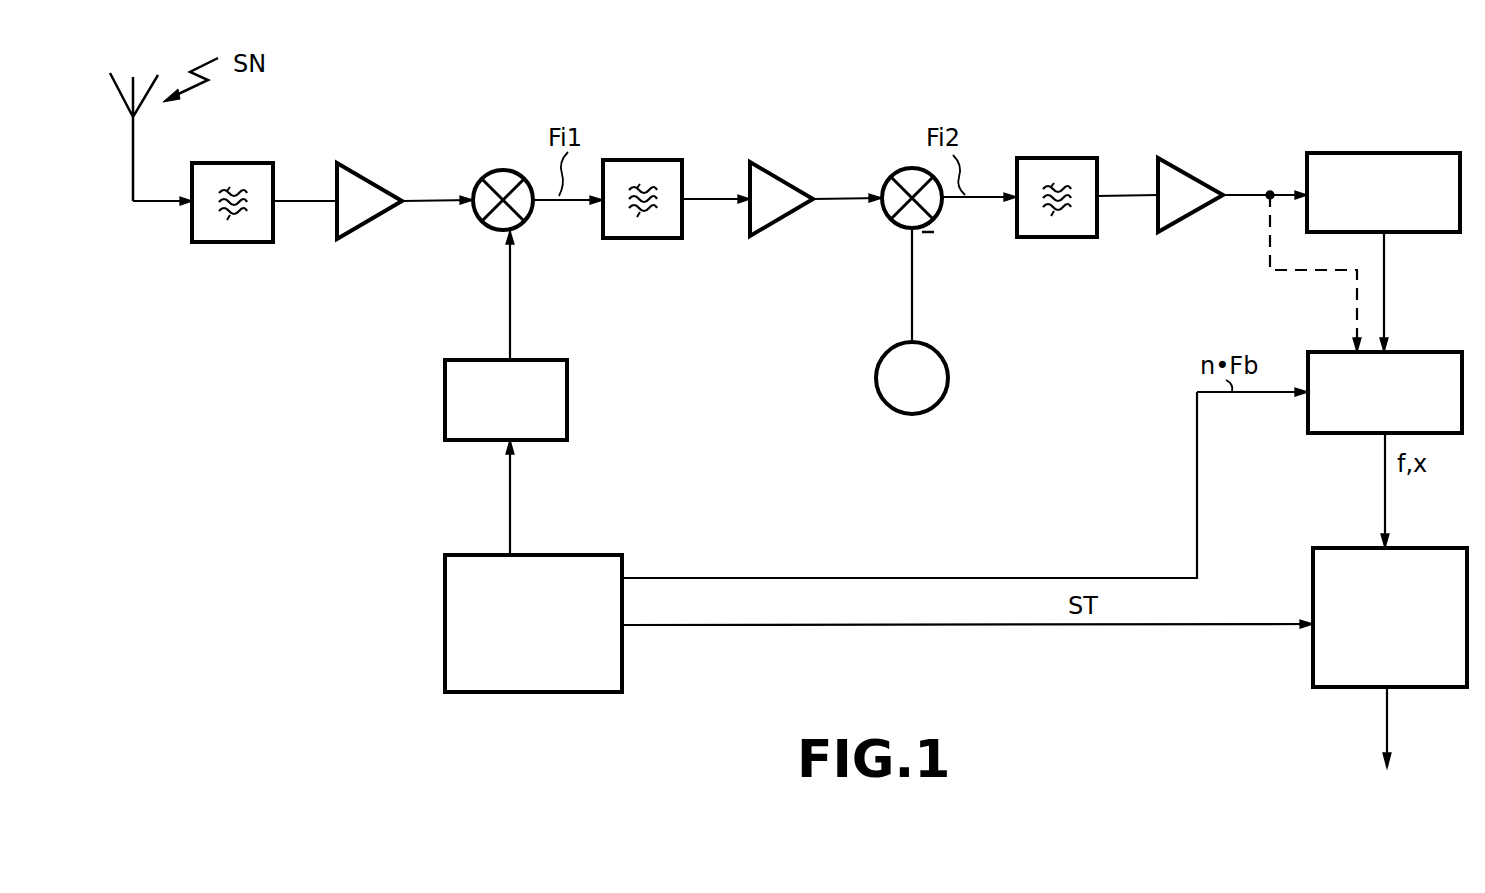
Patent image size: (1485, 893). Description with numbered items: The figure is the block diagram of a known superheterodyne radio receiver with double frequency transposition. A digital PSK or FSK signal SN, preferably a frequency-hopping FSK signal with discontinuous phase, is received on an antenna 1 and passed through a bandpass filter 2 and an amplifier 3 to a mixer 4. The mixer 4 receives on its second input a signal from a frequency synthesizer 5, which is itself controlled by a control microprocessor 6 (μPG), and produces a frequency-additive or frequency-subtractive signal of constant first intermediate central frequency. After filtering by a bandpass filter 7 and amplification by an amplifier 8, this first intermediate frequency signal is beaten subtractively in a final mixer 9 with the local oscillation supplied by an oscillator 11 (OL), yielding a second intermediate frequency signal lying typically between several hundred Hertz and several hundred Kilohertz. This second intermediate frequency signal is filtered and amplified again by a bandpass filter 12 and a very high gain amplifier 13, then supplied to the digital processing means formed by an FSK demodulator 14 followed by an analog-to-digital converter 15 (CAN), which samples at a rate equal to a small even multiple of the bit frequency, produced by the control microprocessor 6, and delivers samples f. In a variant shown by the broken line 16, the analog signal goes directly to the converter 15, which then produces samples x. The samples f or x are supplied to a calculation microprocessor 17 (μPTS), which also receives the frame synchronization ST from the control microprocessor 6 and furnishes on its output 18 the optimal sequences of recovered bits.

The antenna 1 is at (122, 93).
The bandpass filter 2 is at (252, 244).
The amplifier 3 is at (362, 238).
The mixer 4 is at (510, 170).
The frequency synthesizer 5 is at (570, 417).
The control microprocessor 6 is at (445, 653).
The bandpass filter 7 is at (662, 240).
The amplifier 8 is at (773, 232).
The final mixer 9 is at (900, 169).
The oscillator 11 is at (948, 385).
The bandpass filter 12 is at (1056, 158).
The amplifier 13 is at (1185, 167).
The FSK demodulator 14 is at (1378, 153).
The analog-to-digital converter 15 is at (1344, 435).
The broken line 16 is at (1338, 274).
The calculation microprocessor 17 is at (1313, 665).
The output 18 is at (1382, 700).